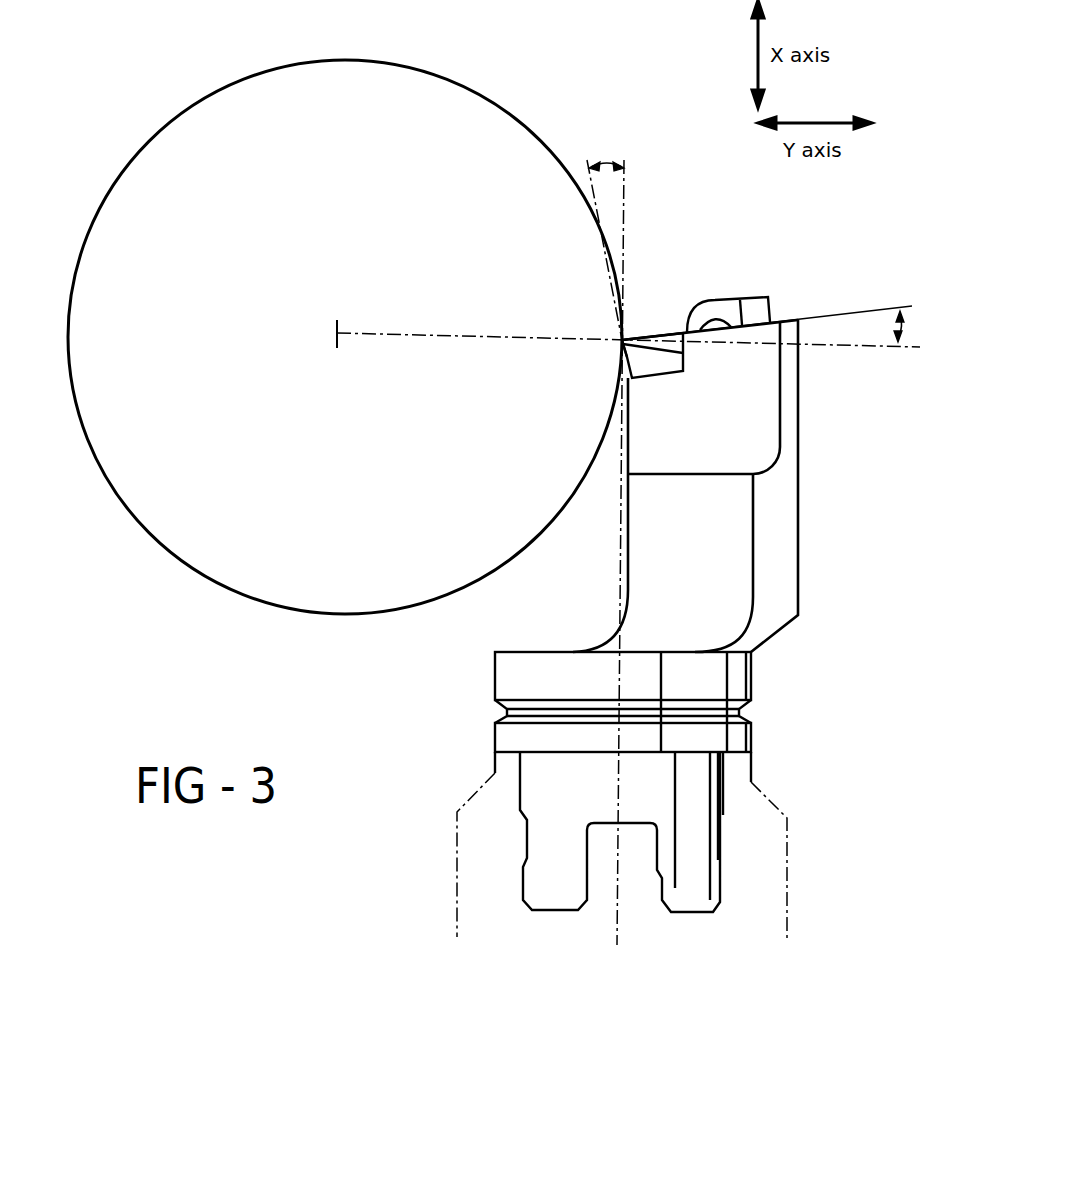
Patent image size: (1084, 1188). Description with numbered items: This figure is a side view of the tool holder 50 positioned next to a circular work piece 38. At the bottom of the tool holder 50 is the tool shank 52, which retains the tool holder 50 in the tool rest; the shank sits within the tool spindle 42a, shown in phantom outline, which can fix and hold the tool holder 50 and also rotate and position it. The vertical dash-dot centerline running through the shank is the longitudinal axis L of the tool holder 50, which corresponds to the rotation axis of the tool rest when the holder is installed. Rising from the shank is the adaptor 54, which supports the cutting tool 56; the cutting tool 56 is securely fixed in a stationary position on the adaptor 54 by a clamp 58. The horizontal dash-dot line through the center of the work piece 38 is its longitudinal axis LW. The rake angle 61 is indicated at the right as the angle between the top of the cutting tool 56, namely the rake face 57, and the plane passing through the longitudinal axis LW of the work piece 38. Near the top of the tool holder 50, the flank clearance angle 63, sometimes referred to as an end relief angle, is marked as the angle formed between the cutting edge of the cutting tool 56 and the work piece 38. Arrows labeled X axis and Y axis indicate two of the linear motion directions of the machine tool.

The work piece 38 is at (189, 121).
The longitudinal axis of the work piece LW is at (336, 328).
The longitudinal axis of the tool holder L is at (617, 923).
The flank clearance angle 63 is at (603, 162).
The rake angle 61 is at (896, 332).
The tool holder 50 is at (810, 488).
The adaptor 54 is at (702, 630).
The cutting tool 56 is at (660, 328).
The rake face 57 is at (621, 326).
The clamp 58 is at (723, 307).
The tool shank 52 is at (700, 858).
The tool spindle 42a is at (773, 803).